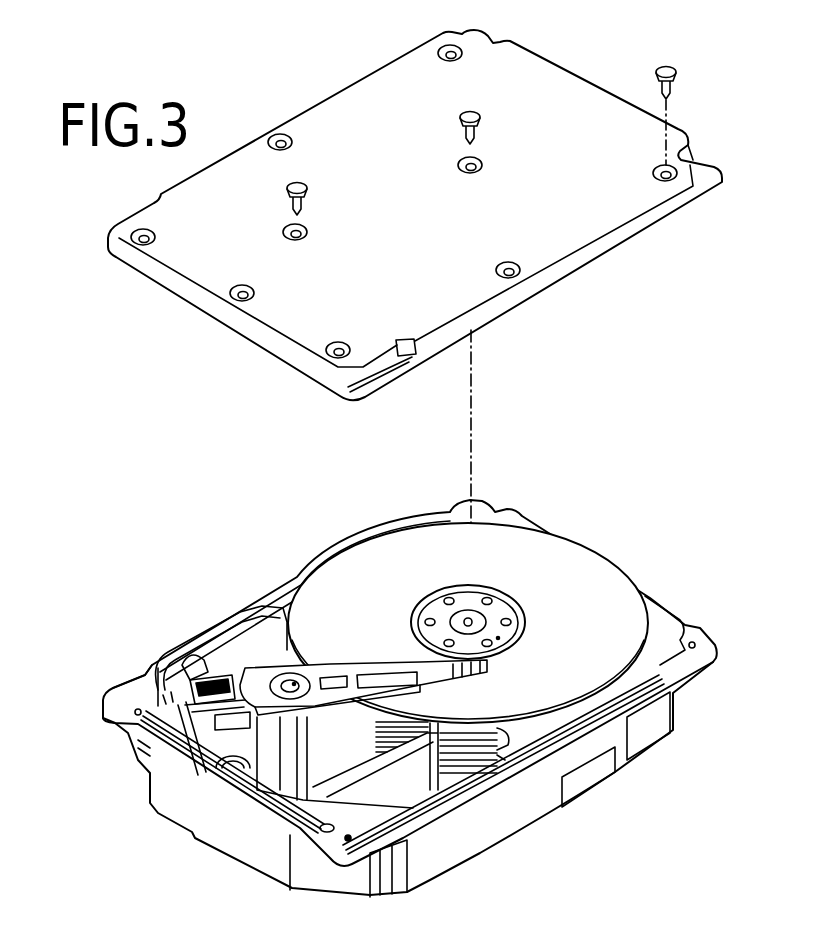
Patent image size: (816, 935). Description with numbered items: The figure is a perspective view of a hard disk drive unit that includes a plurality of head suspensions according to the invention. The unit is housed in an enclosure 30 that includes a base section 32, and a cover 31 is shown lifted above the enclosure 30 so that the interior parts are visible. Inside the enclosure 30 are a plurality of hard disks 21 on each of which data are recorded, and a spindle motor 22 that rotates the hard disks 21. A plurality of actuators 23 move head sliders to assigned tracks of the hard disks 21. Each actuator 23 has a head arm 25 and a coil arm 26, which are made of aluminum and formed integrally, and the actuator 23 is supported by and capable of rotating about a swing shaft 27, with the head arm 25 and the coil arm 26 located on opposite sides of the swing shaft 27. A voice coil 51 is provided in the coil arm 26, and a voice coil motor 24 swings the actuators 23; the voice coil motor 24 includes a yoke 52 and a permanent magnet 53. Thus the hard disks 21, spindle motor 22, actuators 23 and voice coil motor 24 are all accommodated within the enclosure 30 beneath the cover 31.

The hard disks 21 is at (582, 565).
The spindle motor 22 is at (487, 588).
The actuators 23 is at (222, 725).
The voice coil motor 24 is at (138, 710).
The head arm 25 is at (356, 667).
The coil arm 26 is at (247, 662).
The swing shaft 27 is at (282, 672).
The enclosure 30 is at (443, 881).
The cover 31 is at (588, 84).
The base section 32 is at (520, 818).
The voice coil 51 is at (170, 697).
The yoke 52 is at (197, 653).
The permanent magnet 53 is at (138, 740).